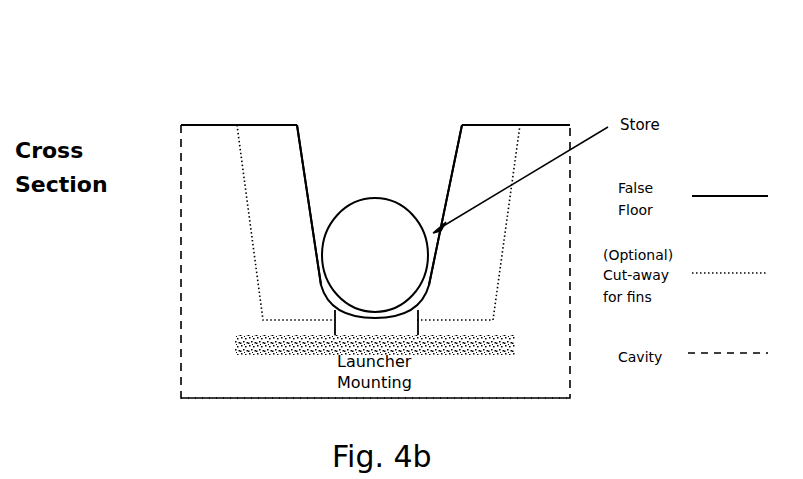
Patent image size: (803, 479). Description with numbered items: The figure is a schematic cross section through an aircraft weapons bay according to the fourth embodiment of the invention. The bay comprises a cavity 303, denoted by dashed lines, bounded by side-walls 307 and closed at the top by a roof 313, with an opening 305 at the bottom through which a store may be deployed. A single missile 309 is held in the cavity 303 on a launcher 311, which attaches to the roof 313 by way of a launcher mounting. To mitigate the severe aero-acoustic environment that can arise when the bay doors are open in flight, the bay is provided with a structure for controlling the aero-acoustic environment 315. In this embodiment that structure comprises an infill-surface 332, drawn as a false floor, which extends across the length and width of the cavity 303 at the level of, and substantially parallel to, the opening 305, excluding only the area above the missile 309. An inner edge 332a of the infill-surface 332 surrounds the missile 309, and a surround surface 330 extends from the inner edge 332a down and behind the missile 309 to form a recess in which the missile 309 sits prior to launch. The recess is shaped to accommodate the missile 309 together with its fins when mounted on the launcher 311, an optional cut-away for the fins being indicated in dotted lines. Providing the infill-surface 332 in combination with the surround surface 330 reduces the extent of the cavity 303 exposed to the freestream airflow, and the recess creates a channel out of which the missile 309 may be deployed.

The cavity 303 is at (217, 273).
The opening 305 is at (338, 112).
The side-walls 307 is at (180, 333).
The missile 309 is at (396, 274).
The launcher 311 is at (270, 347).
The roof 313 is at (477, 402).
The structure for controlling the aero-acoustic environment 315 is at (538, 125).
The surround surface 330 is at (432, 220).
The infill-surface 332 is at (230, 116).
The inner edge 332a is at (300, 116).